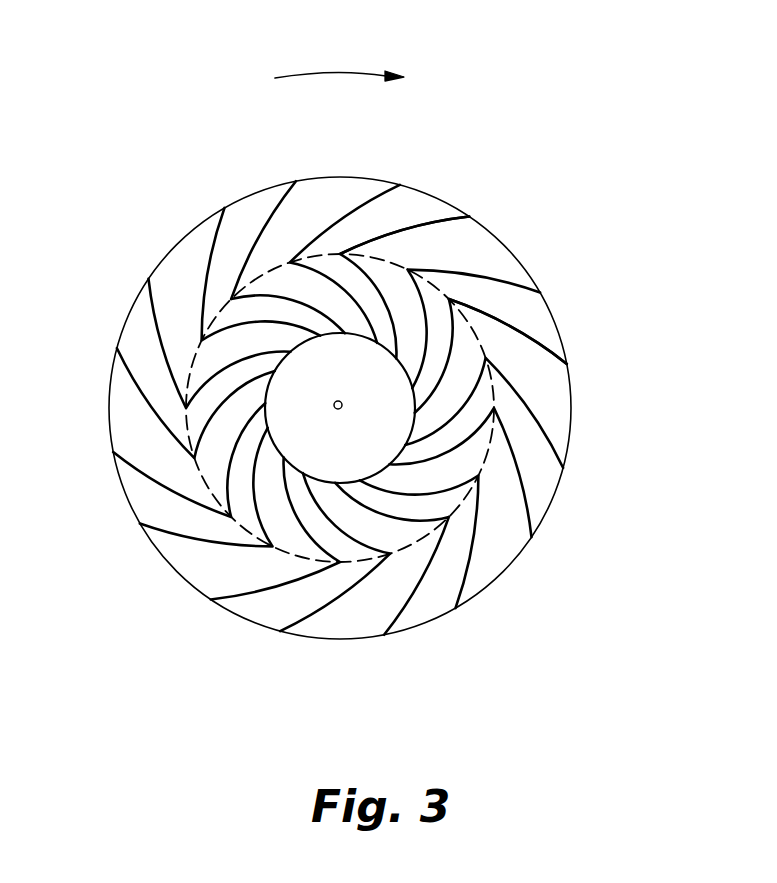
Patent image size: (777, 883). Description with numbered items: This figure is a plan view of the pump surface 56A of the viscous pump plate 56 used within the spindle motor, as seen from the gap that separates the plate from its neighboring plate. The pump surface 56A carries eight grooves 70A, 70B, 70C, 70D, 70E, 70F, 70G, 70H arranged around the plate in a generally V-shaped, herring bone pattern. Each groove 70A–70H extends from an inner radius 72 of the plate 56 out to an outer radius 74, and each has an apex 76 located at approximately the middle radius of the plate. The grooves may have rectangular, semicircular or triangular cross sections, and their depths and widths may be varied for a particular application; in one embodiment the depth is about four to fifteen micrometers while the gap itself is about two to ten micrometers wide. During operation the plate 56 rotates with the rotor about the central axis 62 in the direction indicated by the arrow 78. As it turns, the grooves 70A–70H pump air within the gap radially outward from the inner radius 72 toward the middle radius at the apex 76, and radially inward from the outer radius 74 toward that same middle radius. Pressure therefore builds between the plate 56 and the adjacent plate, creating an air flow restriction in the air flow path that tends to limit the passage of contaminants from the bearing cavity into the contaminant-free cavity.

The plate 56 is at (590, 255).
The pump surface 56A is at (462, 240).
The central axis 62 is at (335, 401).
The groove 70A is at (533, 313).
The groove 70B is at (413, 203).
The groove 70C is at (250, 210).
The groove 70D is at (140, 317).
The groove 70E is at (137, 490).
The groove 70F is at (253, 605).
The groove 70G is at (420, 607).
The groove 70H is at (540, 477).
The inner radius 72 is at (395, 462).
The outer radius 74 is at (570, 418).
The apex 76 is at (565, 378).
The arrow 78 is at (332, 72).